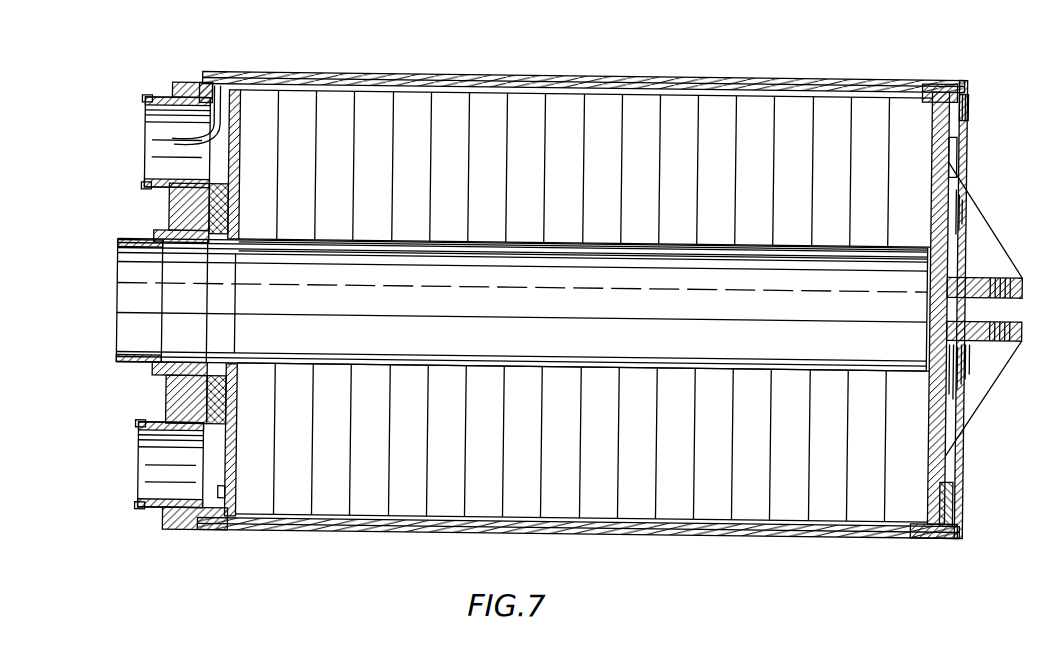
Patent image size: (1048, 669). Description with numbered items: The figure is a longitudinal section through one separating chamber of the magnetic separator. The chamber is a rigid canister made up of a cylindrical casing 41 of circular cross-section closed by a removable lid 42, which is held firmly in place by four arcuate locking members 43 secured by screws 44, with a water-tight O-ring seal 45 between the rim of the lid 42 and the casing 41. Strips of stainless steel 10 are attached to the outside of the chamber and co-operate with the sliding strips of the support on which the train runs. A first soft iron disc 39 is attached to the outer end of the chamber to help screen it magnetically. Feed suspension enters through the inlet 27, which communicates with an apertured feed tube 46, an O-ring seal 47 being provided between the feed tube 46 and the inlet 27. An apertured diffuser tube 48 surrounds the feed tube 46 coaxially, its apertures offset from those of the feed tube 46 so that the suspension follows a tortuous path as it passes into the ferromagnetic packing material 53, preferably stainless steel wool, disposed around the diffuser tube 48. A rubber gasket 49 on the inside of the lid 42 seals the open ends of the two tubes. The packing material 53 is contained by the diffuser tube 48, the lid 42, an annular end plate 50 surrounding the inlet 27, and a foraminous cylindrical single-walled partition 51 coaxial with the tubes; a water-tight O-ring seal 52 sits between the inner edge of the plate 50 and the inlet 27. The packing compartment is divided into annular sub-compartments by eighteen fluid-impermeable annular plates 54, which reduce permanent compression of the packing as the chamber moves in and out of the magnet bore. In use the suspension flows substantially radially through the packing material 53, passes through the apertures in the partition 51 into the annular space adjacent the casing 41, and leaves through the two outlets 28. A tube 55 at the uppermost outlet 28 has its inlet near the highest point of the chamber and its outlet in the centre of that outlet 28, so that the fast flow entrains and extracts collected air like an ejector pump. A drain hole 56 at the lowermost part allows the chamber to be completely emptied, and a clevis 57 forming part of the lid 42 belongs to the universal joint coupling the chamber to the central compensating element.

The strips of stainless steel 10 is at (480, 78).
The inlet 27 is at (105, 303).
The outlets 28 is at (105, 144).
The first soft iron disc 39 is at (190, 217).
The casing 41 is at (603, 534).
The removable lid 42 is at (937, 426).
The arcuate locking members 43 is at (947, 500).
The screws 44 is at (963, 106).
The O-ring seal 45 is at (937, 86).
The feed tube 46 is at (607, 245).
The O-ring seal 47 is at (180, 382).
The diffuser tube 48 is at (790, 246).
The rubber gasket 49 is at (930, 349).
The annular end plate 50 is at (226, 206).
The foraminous cylindrical single-walled partition 51 is at (232, 94).
The O-ring seal 52 is at (237, 371).
The ferromagnetic packing material 53 is at (509, 201).
The annular plates 54 is at (463, 483).
The tube 55 is at (200, 90).
The drain hole 56 is at (185, 528).
The clevis 57 is at (992, 250).